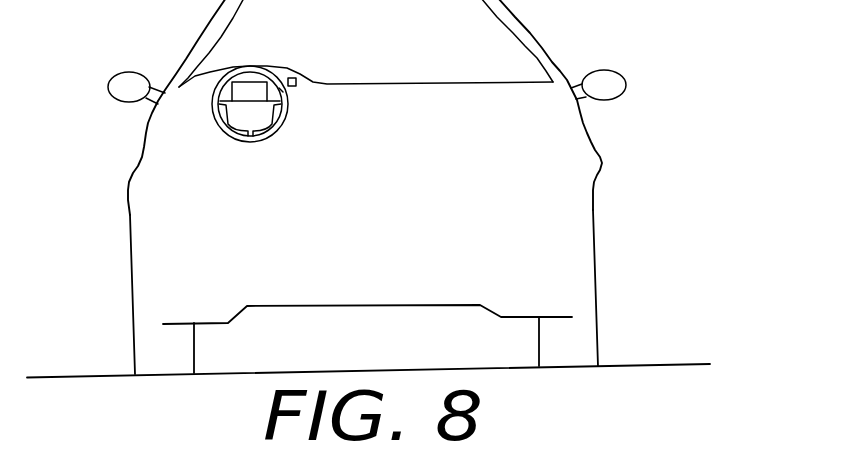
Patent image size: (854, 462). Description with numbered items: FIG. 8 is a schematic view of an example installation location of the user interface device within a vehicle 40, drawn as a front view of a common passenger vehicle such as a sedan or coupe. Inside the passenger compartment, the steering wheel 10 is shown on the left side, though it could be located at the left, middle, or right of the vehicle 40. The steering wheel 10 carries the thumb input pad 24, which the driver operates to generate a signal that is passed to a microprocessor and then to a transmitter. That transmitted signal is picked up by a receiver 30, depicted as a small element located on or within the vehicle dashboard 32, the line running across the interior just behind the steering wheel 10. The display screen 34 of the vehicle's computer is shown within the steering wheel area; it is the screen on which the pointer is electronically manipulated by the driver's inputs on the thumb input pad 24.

The steering wheel 10 is at (217, 127).
The thumb input pad 24 is at (281, 91).
The receiver 30 is at (292, 78).
The vehicle dashboard 32 is at (303, 78).
The display screen 34 is at (245, 91).
The vehicle 40 is at (542, 37).